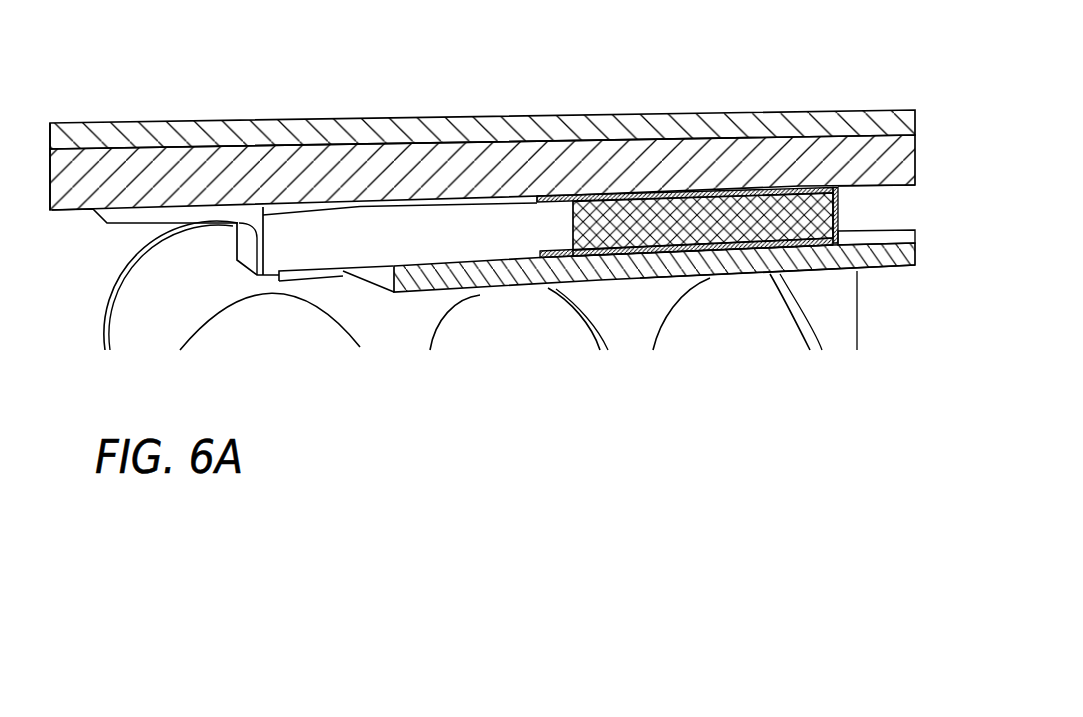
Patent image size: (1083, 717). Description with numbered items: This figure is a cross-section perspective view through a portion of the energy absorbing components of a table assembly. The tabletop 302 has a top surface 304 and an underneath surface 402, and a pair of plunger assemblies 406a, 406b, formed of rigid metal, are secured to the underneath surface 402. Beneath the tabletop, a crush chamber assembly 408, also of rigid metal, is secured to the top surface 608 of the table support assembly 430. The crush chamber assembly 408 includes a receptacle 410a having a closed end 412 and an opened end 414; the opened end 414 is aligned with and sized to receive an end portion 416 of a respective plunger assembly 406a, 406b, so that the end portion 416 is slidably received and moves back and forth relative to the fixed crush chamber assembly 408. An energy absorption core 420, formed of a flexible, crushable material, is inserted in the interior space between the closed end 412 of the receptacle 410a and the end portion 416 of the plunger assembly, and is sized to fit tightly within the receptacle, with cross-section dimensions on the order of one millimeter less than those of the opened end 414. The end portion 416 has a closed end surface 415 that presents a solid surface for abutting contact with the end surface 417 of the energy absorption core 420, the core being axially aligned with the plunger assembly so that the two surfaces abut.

The tabletop 302 is at (266, 95).
The top surface 304 is at (207, 130).
The underneath surface 402 is at (65, 211).
The plunger assembly 406a is at (345, 227).
The plunger assembly 406b is at (877, 207).
The crush chamber assembly 408 is at (665, 193).
The receptacle 410a is at (710, 254).
The closed end 412 is at (835, 240).
The opened end 414 is at (545, 258).
The closed end surface 415 is at (586, 256).
The end portion 416 is at (557, 203).
The end surface 417 is at (562, 221).
The energy absorption core 420 is at (738, 217).
The table support assembly 430 is at (767, 267).
The top surface 608 is at (420, 268).